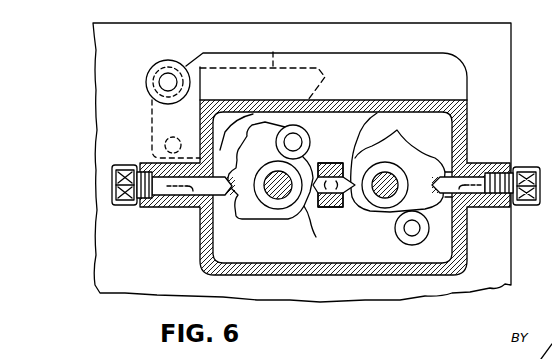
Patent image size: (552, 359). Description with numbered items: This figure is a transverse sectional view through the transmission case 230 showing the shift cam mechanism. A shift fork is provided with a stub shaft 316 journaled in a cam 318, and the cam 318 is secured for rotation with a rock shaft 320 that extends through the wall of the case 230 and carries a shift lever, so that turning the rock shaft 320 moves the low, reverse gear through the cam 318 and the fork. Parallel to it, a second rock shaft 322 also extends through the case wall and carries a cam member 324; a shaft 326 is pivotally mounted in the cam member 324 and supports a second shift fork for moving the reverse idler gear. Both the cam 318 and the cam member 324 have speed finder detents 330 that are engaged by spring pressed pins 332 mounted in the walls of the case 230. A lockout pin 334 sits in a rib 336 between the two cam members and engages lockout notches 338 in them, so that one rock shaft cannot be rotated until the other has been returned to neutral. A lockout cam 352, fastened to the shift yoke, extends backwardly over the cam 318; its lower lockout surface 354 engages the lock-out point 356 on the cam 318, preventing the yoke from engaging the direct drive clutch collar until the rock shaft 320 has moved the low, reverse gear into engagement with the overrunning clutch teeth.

The case 230 is at (498, 52).
The stub shaft 316 is at (296, 140).
The cam 318 is at (300, 156).
The rock shaft 320 is at (277, 196).
The second rock shaft 322 is at (406, 139).
The cam member 324 is at (422, 162).
The shaft 326 is at (418, 231).
The speed finder detents 330 is at (405, 127).
The spring pressed pins 332 is at (490, 166).
The lockout pin 334 is at (318, 207).
The rib 336 is at (387, 168).
The lockout notches 338 is at (316, 237).
The lockout cam 352 is at (269, 34).
The lower lockout surface 354 is at (260, 102).
The lock-out point 356 is at (313, 112).